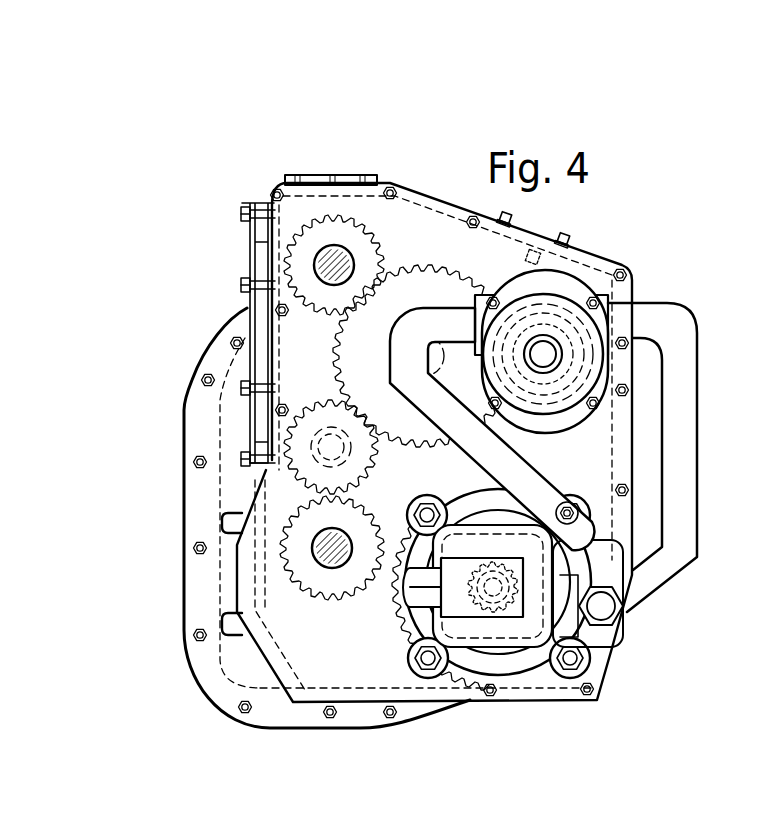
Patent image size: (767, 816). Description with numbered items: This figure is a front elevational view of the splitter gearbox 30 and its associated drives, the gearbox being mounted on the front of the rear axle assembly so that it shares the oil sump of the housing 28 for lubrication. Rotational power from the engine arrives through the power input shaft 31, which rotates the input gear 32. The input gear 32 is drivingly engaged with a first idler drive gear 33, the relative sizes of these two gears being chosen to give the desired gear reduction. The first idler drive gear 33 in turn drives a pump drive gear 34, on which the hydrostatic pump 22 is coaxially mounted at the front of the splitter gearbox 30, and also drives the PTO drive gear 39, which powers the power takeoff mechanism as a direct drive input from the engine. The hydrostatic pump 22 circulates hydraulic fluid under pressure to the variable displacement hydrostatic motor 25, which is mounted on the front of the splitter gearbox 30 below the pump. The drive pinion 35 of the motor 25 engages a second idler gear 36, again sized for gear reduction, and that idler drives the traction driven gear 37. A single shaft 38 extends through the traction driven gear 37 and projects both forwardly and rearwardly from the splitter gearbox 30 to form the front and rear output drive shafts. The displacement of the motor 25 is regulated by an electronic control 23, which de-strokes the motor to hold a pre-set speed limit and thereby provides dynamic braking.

The splitter gearbox 30 is at (272, 100).
The power input shaft 31 is at (335, 250).
The input gear 32 is at (308, 232).
The first idler drive gear 33 is at (418, 263).
The hydrostatic pump 22 is at (575, 292).
The pump drive gear 34 is at (587, 297).
The housing 28 is at (206, 343).
The PTO drive gear 39 is at (307, 489).
The single shaft 38 is at (312, 553).
The traction driven gear 37 is at (322, 596).
The second idler gear 36 is at (368, 655).
The electronic control 23 is at (477, 620).
The drive pinion 35 is at (535, 597).
The variable displacement hydrostatic motor 25 is at (613, 627).